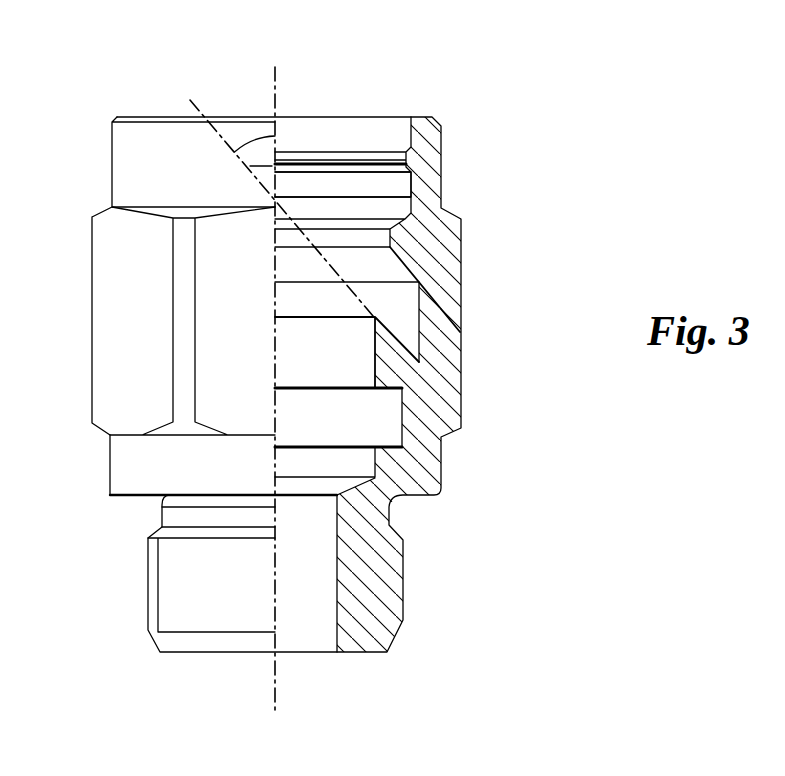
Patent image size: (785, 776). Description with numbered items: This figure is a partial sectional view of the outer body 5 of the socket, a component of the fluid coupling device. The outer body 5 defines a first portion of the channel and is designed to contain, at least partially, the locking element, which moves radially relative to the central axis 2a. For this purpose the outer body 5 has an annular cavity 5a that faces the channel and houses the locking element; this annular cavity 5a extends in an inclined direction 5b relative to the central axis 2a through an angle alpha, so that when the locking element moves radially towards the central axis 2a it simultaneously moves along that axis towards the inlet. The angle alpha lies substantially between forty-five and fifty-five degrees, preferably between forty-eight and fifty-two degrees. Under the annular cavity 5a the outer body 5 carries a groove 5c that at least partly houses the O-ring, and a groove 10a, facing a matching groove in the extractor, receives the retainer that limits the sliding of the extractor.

The central axis 2a is at (277, 688).
The outer body 5 is at (502, 593).
The annular cavity 5a is at (410, 315).
The inclined direction 5b is at (197, 97).
The groove 5c is at (392, 417).
The groove 10a is at (411, 183).